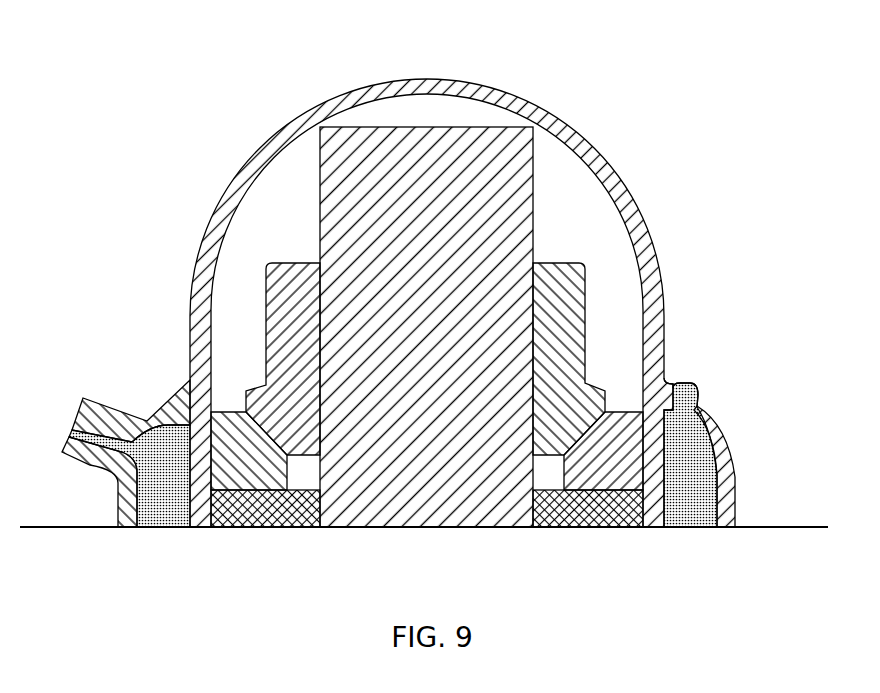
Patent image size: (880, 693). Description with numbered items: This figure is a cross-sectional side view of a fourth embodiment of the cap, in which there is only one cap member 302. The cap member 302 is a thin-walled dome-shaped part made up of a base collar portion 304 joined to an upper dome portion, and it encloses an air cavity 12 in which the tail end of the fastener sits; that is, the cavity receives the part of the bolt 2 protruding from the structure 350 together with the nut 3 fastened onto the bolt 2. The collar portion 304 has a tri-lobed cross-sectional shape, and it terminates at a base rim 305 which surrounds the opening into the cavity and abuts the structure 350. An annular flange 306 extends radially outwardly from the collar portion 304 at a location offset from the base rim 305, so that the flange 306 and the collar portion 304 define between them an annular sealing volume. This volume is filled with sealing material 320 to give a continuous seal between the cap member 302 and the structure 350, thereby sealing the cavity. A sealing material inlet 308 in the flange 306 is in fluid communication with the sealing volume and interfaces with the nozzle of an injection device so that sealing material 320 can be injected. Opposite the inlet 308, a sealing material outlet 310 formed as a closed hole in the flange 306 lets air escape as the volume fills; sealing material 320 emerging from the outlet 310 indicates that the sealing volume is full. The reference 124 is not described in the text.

The bolt 2 is at (432, 127).
The base collar portion 304 is at (528, 102).
The cap member 302 is at (196, 357).
The air cavity 12 is at (290, 210).
The sealing material outlet 310 is at (703, 405).
The annular flange 306 is at (728, 448).
The structure 350 is at (782, 527).
The sealing material inlet 308 is at (85, 466).
The base rim 305 is at (195, 527).
The base ring 124 is at (268, 527).
The nut 3 is at (627, 527).
The sealing material 320 is at (690, 508).